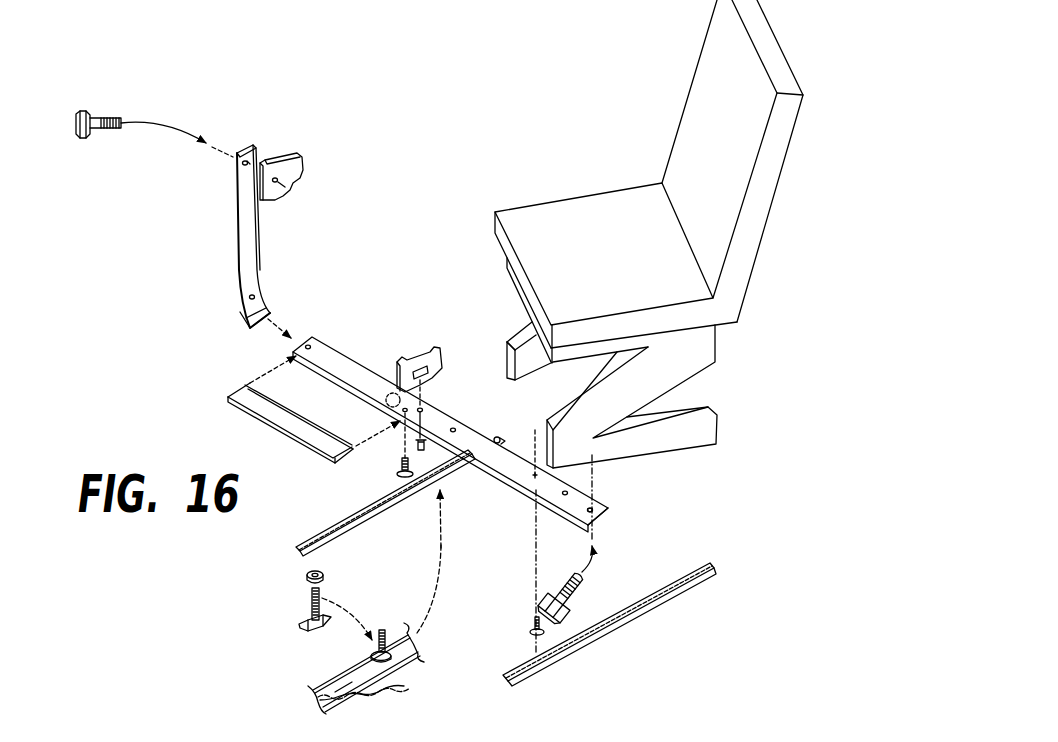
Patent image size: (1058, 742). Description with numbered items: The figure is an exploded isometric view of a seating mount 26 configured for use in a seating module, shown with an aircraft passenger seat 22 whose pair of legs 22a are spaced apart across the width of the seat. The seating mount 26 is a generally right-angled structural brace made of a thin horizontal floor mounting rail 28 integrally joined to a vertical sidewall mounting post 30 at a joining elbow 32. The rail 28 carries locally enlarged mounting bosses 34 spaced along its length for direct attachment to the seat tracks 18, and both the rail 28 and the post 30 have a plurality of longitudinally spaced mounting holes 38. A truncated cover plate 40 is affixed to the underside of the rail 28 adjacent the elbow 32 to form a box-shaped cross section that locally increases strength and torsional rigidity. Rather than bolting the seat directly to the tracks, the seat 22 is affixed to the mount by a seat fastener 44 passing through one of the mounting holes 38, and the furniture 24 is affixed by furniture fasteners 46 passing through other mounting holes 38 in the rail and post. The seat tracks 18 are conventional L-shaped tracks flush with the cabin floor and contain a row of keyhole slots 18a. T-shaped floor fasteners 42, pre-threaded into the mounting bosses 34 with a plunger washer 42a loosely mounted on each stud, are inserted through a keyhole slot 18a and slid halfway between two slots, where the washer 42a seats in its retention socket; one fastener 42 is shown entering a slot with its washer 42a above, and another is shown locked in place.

The seat track 18 is at (385, 528).
The keyhole slot 18a is at (352, 675).
The aircraft passenger seat 22 is at (616, 276).
The leg 22a is at (688, 381).
The furniture 24 is at (293, 167).
The seating mount 26 is at (604, 500).
The floor mounting rail 28 is at (450, 417).
The sidewall mounting post 30 is at (235, 217).
The joining elbow 32 is at (242, 322).
The mounting boss 34 is at (386, 398).
The mounting hole 38 is at (256, 298).
The cover plate 40 is at (246, 424).
The floor fastener 42 is at (397, 473).
The plunger washer 42a is at (307, 572).
The seat fastener 44 is at (583, 583).
The furniture fastener 46 is at (102, 118).